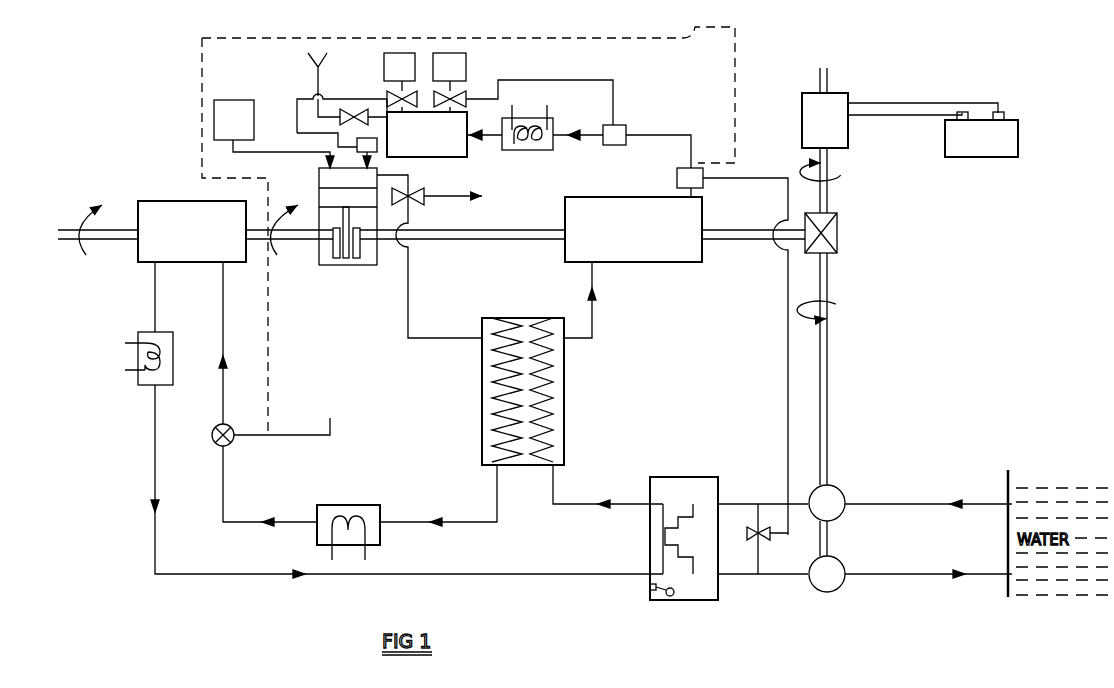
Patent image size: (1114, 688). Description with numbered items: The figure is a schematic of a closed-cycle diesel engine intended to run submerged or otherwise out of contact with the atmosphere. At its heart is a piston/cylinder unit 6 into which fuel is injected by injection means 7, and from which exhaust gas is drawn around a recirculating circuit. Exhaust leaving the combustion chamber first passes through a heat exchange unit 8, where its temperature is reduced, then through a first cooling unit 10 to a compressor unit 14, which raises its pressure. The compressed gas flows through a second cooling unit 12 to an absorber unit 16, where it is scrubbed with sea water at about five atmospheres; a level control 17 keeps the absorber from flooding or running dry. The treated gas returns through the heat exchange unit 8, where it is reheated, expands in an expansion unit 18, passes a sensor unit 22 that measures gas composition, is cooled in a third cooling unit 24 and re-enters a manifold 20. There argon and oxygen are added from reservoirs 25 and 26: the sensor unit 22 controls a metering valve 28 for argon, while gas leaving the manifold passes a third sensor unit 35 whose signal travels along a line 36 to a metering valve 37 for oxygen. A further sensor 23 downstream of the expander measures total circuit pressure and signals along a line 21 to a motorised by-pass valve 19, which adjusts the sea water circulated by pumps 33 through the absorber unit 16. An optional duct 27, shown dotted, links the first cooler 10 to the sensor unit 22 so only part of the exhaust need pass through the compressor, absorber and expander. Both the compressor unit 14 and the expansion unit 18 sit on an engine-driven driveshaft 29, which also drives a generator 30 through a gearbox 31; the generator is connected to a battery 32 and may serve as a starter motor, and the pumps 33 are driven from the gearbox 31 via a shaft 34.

The piston/cylinder unit 6 is at (319, 178).
The fuel injection means 7 is at (313, 151).
The heat exchange unit 8 is at (482, 387).
The first cooling unit 10 is at (380, 513).
The second cooling unit 12 is at (148, 330).
The compressor unit 14 is at (160, 201).
The absorber unit 16 is at (718, 588).
The level control 17 is at (652, 588).
The expansion unit 18 is at (656, 262).
The motorised by-pass valve 19 is at (765, 541).
The manifold 20 is at (427, 134).
The line 21 is at (788, 338).
The sensor unit 22 is at (626, 125).
The further sensor 23 is at (703, 185).
The third cooling unit 24 is at (560, 100).
The argon reservoir 25 is at (466, 70).
The oxygen reservoir 26 is at (384, 74).
The duct 27 is at (740, 30).
The metering valve 28 is at (458, 106).
The driveshaft 29 is at (445, 243).
The generator 30 is at (802, 122).
The gearbox 31 is at (843, 255).
The battery 32 is at (945, 140).
The pumps 33 is at (841, 489).
The shaft 34 is at (828, 386).
The third sensor unit 35 is at (377, 146).
The line 36 is at (297, 118).
The metering valve 37 is at (388, 94).